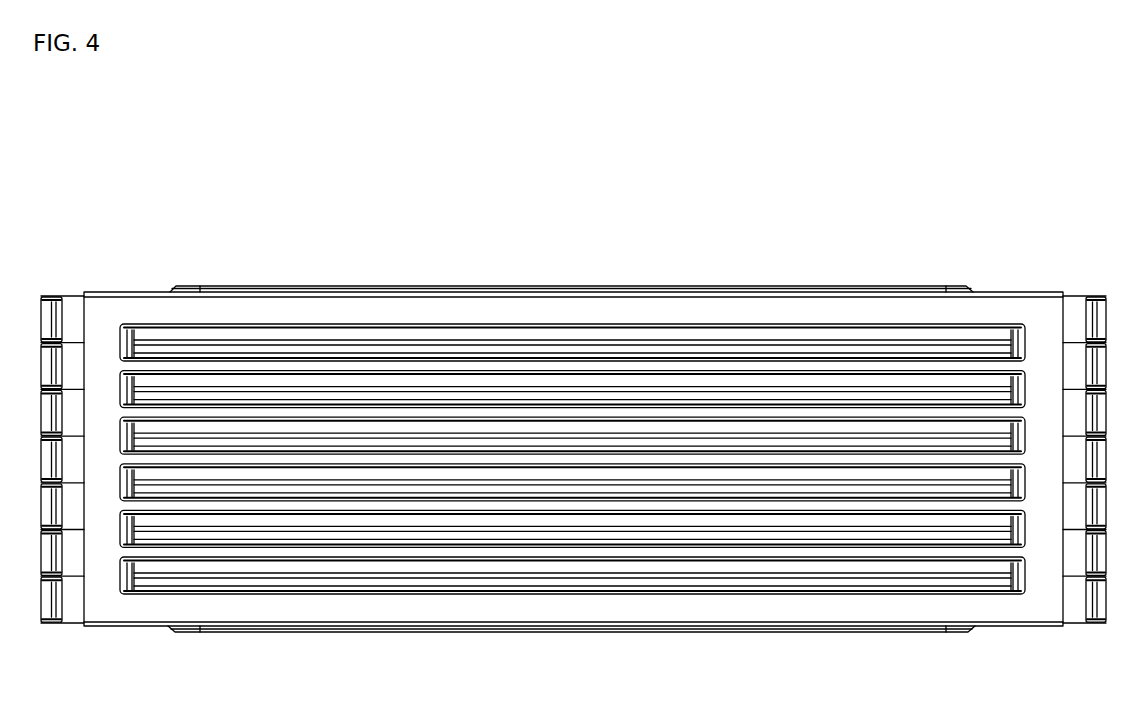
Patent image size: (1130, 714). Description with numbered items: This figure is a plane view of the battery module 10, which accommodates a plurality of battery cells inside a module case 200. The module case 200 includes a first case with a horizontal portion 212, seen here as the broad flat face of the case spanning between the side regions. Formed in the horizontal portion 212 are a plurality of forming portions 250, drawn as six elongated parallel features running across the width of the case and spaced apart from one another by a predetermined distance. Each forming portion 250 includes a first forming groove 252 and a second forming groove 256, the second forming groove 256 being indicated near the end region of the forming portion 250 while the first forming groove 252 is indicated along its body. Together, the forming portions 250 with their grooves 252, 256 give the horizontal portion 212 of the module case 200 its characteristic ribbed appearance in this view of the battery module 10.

The battery module 10 is at (220, 176).
The module case 200 is at (299, 274).
The horizontal portion 212 is at (119, 307).
The forming portion 250 is at (386, 324).
The first forming groove 252 is at (937, 337).
The second forming groove 256 is at (1015, 327).